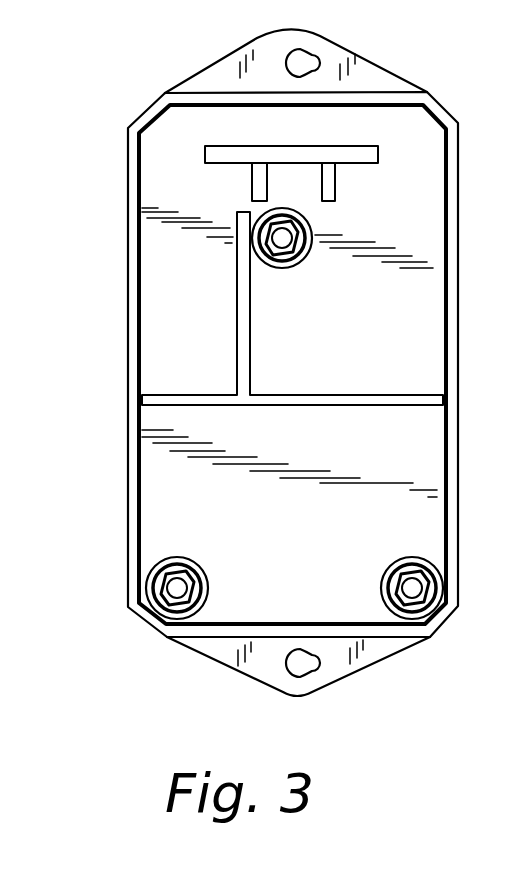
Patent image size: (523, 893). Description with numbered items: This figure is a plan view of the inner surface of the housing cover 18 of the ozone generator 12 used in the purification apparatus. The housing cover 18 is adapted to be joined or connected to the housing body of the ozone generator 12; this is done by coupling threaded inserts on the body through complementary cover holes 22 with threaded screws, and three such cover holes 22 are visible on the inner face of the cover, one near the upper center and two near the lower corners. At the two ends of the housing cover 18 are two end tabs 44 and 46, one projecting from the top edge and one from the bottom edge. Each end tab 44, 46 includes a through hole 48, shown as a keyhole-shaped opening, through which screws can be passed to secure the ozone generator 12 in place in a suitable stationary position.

The ozone generator 12 is at (100, 178).
The housing cover 18 is at (466, 316).
The cover holes 22 is at (308, 255).
The end tab 44 is at (368, 655).
The end tab 46 is at (357, 68).
The through hole 48 is at (282, 58).